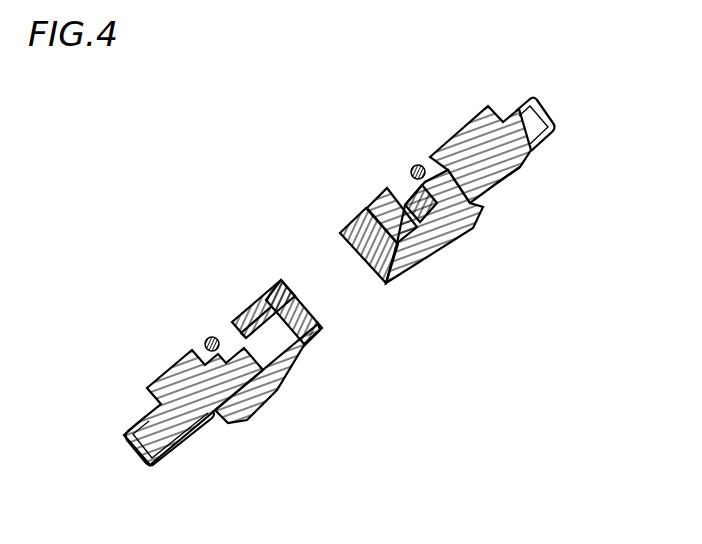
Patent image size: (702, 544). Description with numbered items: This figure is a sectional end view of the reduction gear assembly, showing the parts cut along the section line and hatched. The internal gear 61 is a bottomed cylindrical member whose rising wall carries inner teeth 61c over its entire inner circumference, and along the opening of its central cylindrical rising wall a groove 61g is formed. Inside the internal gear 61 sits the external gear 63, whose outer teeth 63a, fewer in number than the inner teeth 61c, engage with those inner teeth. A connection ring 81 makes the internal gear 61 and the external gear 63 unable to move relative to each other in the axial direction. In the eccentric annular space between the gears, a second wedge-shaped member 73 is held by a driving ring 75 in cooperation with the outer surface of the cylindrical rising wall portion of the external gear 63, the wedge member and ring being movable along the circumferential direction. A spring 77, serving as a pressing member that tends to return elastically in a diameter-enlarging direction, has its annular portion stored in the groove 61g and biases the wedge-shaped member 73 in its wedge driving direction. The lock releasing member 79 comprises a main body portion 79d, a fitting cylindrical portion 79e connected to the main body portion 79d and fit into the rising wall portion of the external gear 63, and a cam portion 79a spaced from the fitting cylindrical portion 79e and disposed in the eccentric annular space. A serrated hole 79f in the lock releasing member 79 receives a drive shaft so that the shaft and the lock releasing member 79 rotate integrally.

The internal gear 61 is at (433, 152).
The inner teeth 61c is at (188, 443).
The groove 61g is at (200, 342).
The external gear 63 is at (455, 230).
The outer teeth 63a is at (510, 172).
The second wedge-shaped member 73 is at (383, 199).
The driving ring 75 is at (407, 194).
The spring 77 is at (415, 165).
The lock releasing member 79 is at (240, 285).
The cam portion 79a is at (235, 314).
The main body portion 79d is at (258, 340).
The fitting cylindrical portion 79e is at (298, 300).
The hole 79f is at (372, 284).
The connection ring 81 is at (530, 102).